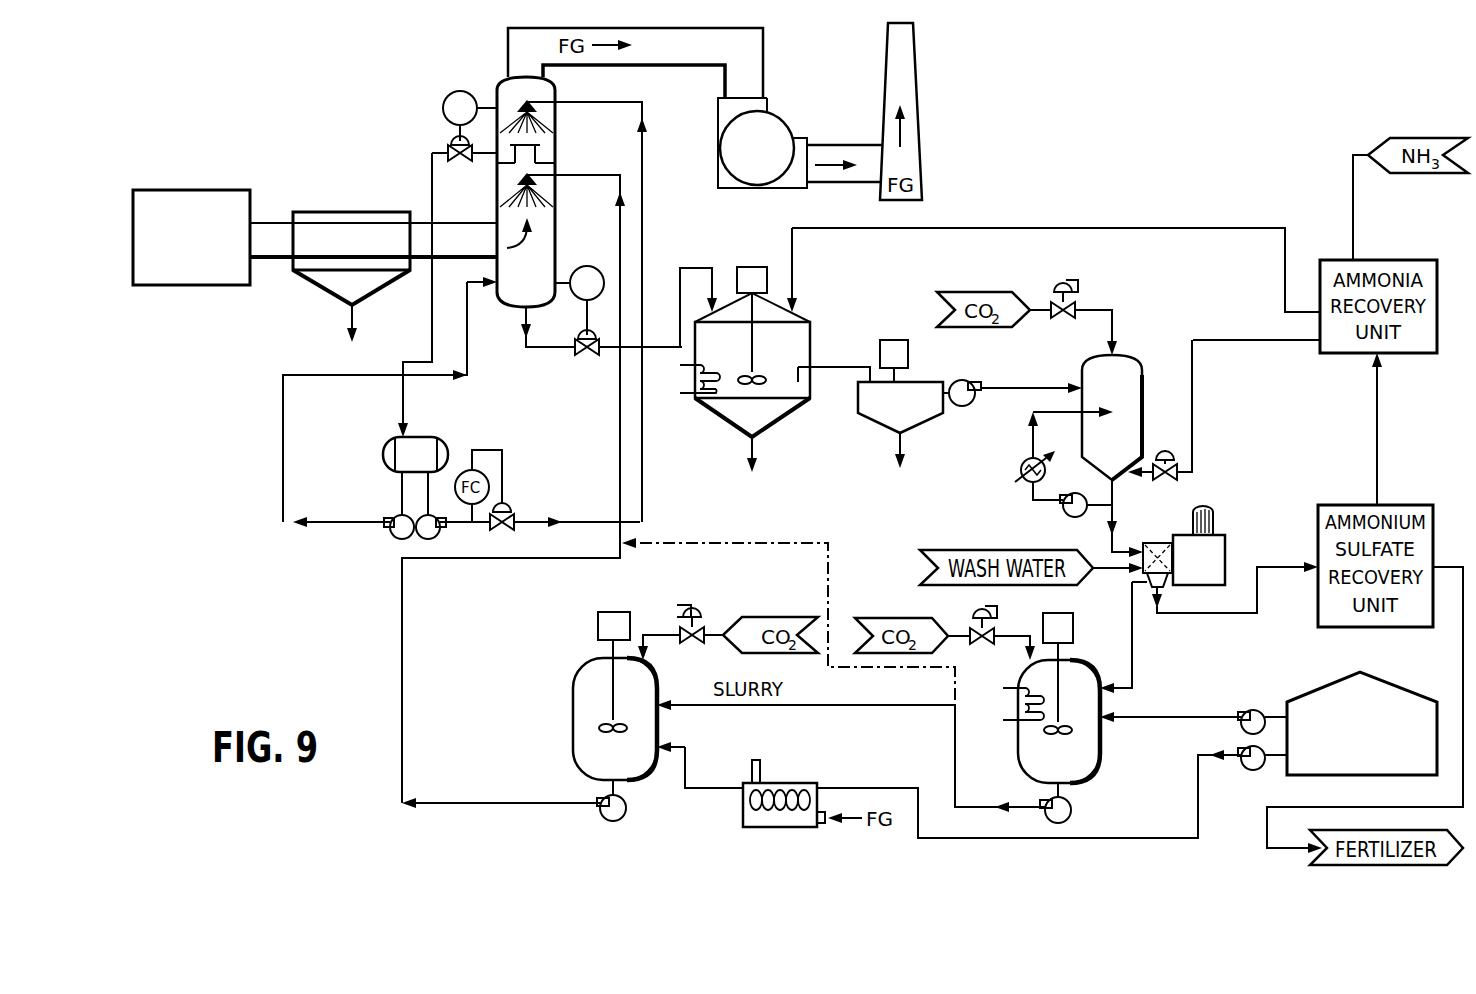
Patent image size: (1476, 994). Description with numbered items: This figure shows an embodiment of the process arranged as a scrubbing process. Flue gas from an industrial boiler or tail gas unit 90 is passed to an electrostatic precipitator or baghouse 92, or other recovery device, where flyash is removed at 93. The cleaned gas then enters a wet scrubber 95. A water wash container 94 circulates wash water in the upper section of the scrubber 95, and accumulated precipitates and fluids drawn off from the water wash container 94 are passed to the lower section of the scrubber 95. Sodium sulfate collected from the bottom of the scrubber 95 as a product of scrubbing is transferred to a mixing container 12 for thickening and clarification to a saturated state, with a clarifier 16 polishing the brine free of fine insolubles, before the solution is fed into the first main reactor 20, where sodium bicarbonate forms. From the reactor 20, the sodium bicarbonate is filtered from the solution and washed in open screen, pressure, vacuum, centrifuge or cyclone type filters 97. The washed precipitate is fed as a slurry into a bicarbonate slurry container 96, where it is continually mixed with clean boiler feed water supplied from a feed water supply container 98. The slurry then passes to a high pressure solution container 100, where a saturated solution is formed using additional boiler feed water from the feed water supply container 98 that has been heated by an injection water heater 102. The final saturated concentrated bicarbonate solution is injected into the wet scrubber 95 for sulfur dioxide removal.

The industrial boiler or tail gas unit 90 is at (205, 190).
The electrostatic precipitator or baghouse 92 is at (357, 212).
The flyash removal point 93 is at (345, 300).
The scrubber 95 is at (497, 90).
The water wash container 94 is at (388, 438).
The mixing container 12 is at (742, 397).
The clarifier 16 is at (917, 382).
The first main reactor 20 is at (1143, 377).
The filters 97 is at (1228, 558).
The bicarbonate slurry container 96 is at (1100, 752).
The high pressure solution container 100 is at (580, 683).
The injection water heater 102 is at (790, 783).
The feed water supply container 98 is at (1300, 690).